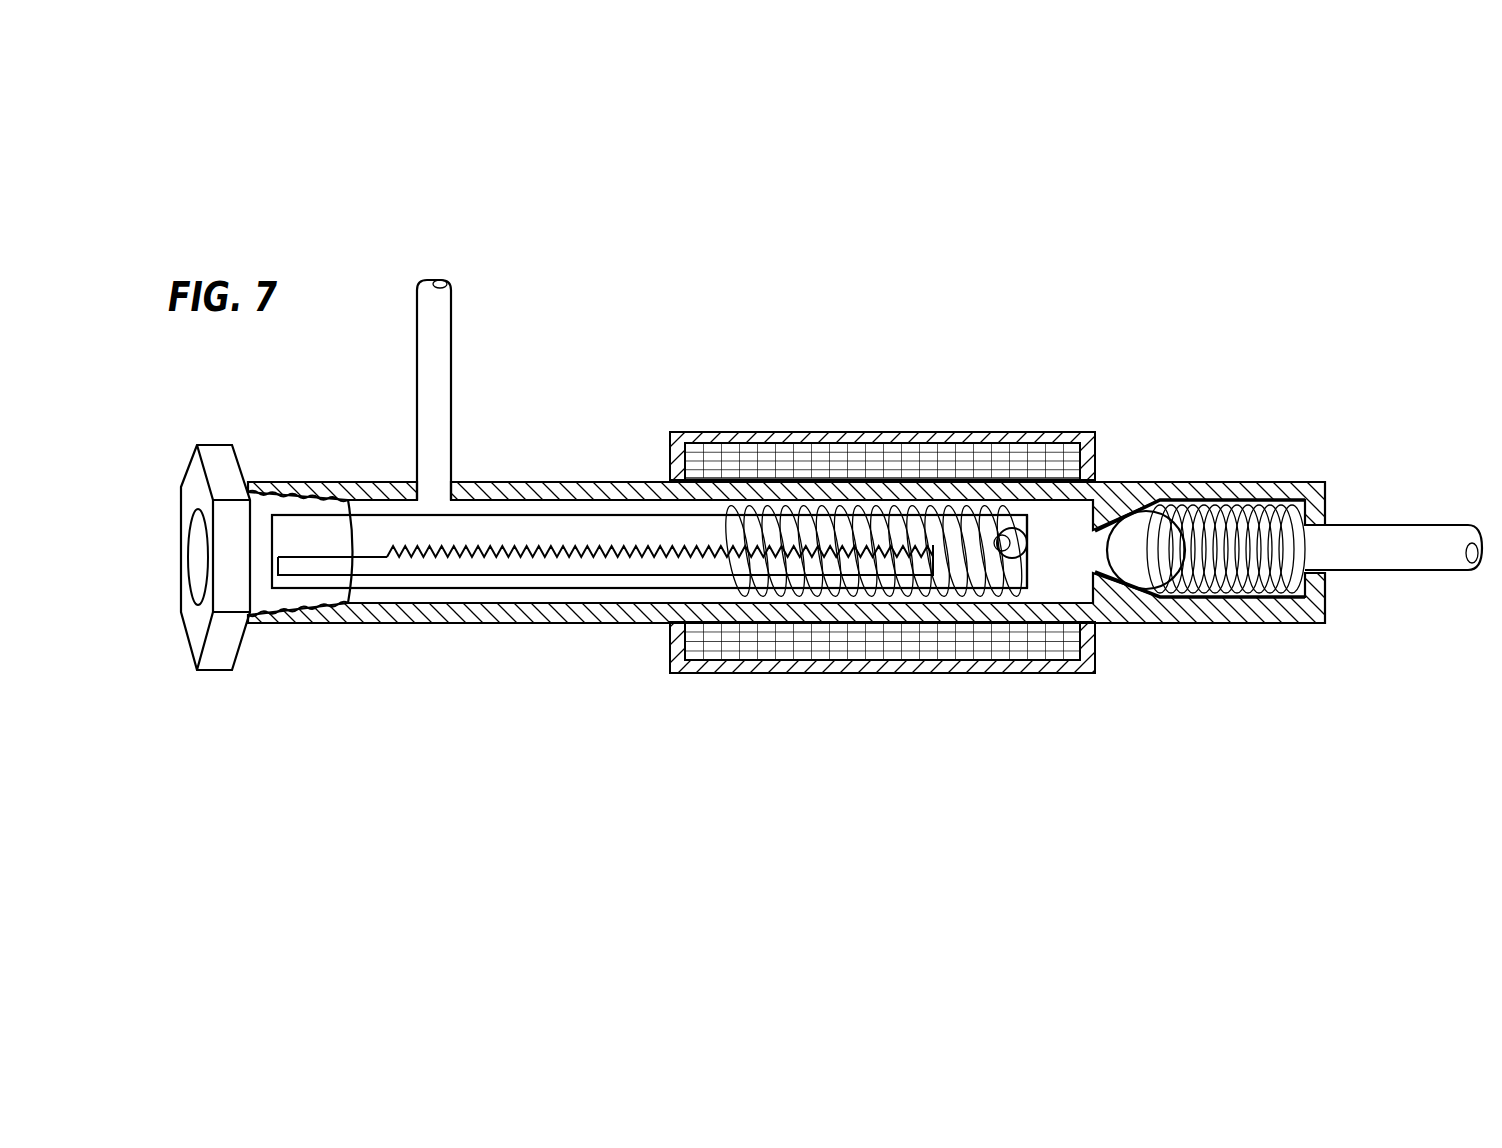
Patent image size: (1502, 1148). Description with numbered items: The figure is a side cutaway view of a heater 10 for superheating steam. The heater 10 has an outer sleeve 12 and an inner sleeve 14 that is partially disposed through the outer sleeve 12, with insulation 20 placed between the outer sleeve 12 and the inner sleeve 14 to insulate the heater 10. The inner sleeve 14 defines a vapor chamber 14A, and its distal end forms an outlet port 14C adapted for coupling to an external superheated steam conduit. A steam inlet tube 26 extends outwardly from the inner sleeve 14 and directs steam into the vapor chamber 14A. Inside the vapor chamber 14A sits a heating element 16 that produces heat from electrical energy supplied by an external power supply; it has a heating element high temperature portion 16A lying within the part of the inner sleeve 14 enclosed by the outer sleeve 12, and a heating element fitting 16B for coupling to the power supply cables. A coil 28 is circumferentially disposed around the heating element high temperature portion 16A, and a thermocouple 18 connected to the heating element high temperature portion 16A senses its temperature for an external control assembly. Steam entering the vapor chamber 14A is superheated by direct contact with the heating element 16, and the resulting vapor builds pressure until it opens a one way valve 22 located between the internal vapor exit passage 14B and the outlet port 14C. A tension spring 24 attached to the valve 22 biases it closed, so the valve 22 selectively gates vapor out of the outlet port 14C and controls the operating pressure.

The heater 10 is at (845, 338).
The outer sleeve 12 is at (1083, 432).
The inner sleeve 14 is at (537, 612).
The vapor chamber 14A is at (540, 510).
The internal vapor exit passage 14B is at (1095, 548).
The outlet port 14C is at (1310, 548).
The heating element 16 is at (393, 582).
The heating element high temperature portion 16A is at (673, 567).
The heating element fitting 16B is at (227, 650).
The thermocouple 18 is at (1018, 548).
The insulation 20 is at (895, 440).
The one way valve 22 is at (1130, 567).
The tension spring 24 is at (1247, 573).
The steam inlet tube 26 is at (445, 333).
The coil 28 is at (917, 592).